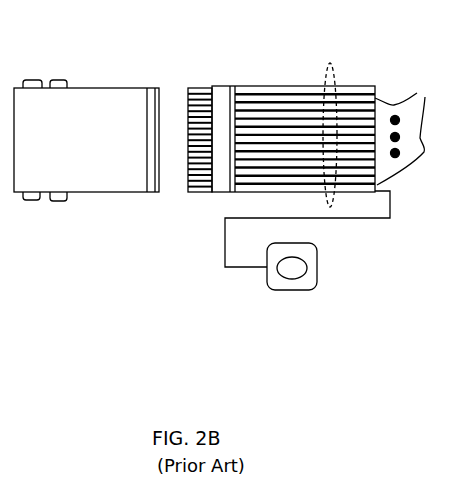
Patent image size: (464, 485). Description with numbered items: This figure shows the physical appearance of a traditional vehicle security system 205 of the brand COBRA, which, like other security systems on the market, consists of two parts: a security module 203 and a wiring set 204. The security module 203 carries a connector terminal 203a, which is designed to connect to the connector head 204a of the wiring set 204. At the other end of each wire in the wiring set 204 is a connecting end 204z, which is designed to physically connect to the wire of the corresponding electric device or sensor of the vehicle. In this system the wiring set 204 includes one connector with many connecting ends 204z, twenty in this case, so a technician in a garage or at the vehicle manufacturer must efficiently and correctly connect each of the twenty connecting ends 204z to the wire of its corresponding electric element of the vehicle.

The security module 203 is at (118, 98).
The connector terminal 203a is at (158, 193).
The wiring set 204 is at (322, 80).
The connector head 204a is at (215, 184).
The connecting end 204z is at (415, 83).
The security system 205 is at (292, 290).